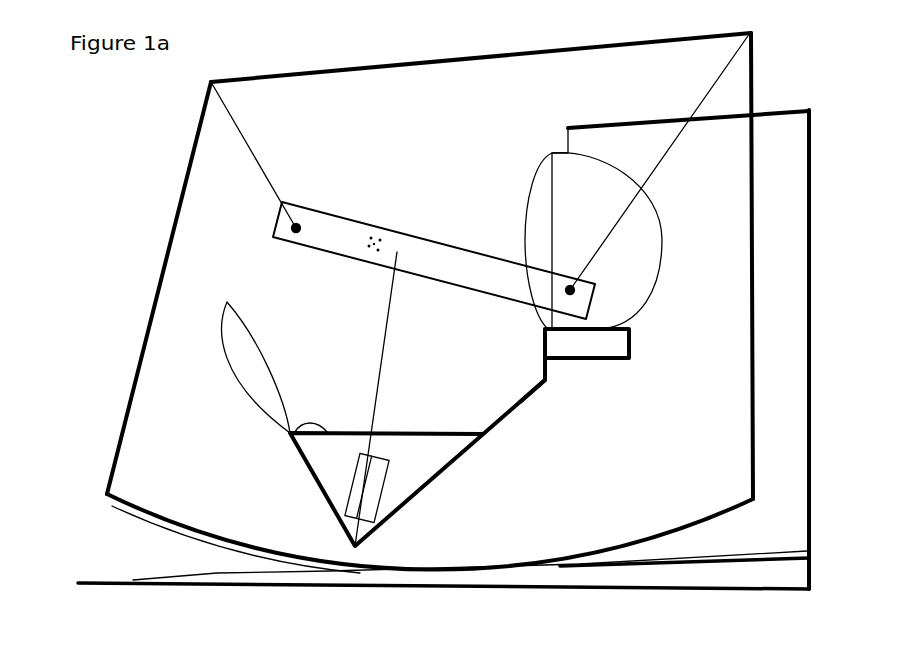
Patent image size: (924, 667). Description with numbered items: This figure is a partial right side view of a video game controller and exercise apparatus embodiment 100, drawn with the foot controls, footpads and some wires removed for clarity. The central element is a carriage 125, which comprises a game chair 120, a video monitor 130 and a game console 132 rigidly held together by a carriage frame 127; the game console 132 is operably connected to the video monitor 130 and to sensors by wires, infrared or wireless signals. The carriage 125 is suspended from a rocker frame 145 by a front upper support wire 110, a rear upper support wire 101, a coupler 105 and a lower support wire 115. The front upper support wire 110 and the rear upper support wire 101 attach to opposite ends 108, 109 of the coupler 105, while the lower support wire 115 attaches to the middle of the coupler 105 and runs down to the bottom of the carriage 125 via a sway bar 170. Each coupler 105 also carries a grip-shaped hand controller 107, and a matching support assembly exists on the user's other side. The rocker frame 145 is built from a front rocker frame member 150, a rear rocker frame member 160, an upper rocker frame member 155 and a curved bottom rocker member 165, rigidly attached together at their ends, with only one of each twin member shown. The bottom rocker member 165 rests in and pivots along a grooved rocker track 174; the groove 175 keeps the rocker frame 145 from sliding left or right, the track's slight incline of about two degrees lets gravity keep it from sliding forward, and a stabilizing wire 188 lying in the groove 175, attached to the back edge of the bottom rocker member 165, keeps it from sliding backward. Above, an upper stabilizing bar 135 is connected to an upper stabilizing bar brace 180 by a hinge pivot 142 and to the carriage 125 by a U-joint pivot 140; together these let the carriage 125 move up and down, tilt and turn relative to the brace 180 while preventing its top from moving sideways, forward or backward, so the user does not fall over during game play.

The video game controller and exercise apparatus embodiment 100 is at (146, 220).
The rear upper support wire 101 is at (250, 142).
The coupler 105 is at (341, 213).
The grip-shaped hand controller 107 is at (366, 248).
The end of the coupler 108 is at (566, 295).
The end of the coupler 109 is at (290, 224).
The front upper support wire 110 is at (716, 80).
The lower support wire 115 is at (387, 336).
The game chair 120 is at (260, 342).
The carriage 125 is at (500, 422).
The carriage frame 127 is at (522, 408).
The video monitor 130 is at (540, 178).
The game console 132 is at (608, 362).
The upper stabilizing bar 135 is at (652, 121).
The U-joint pivot 140 is at (566, 137).
The hinge pivot 142 is at (814, 105).
The rocker frame 145 is at (600, 546).
The front rocker frame member 150 is at (751, 422).
The upper rocker frame member 155 is at (356, 68).
The rear rocker frame member 160 is at (154, 304).
The bottom rocker member 165 is at (640, 538).
The sway bar 170 is at (386, 478).
The rocker track 174 is at (668, 566).
The groove 175 is at (220, 575).
The upper stabilizing bar brace 180 is at (812, 312).
The stabilizing wire 188 is at (133, 512).